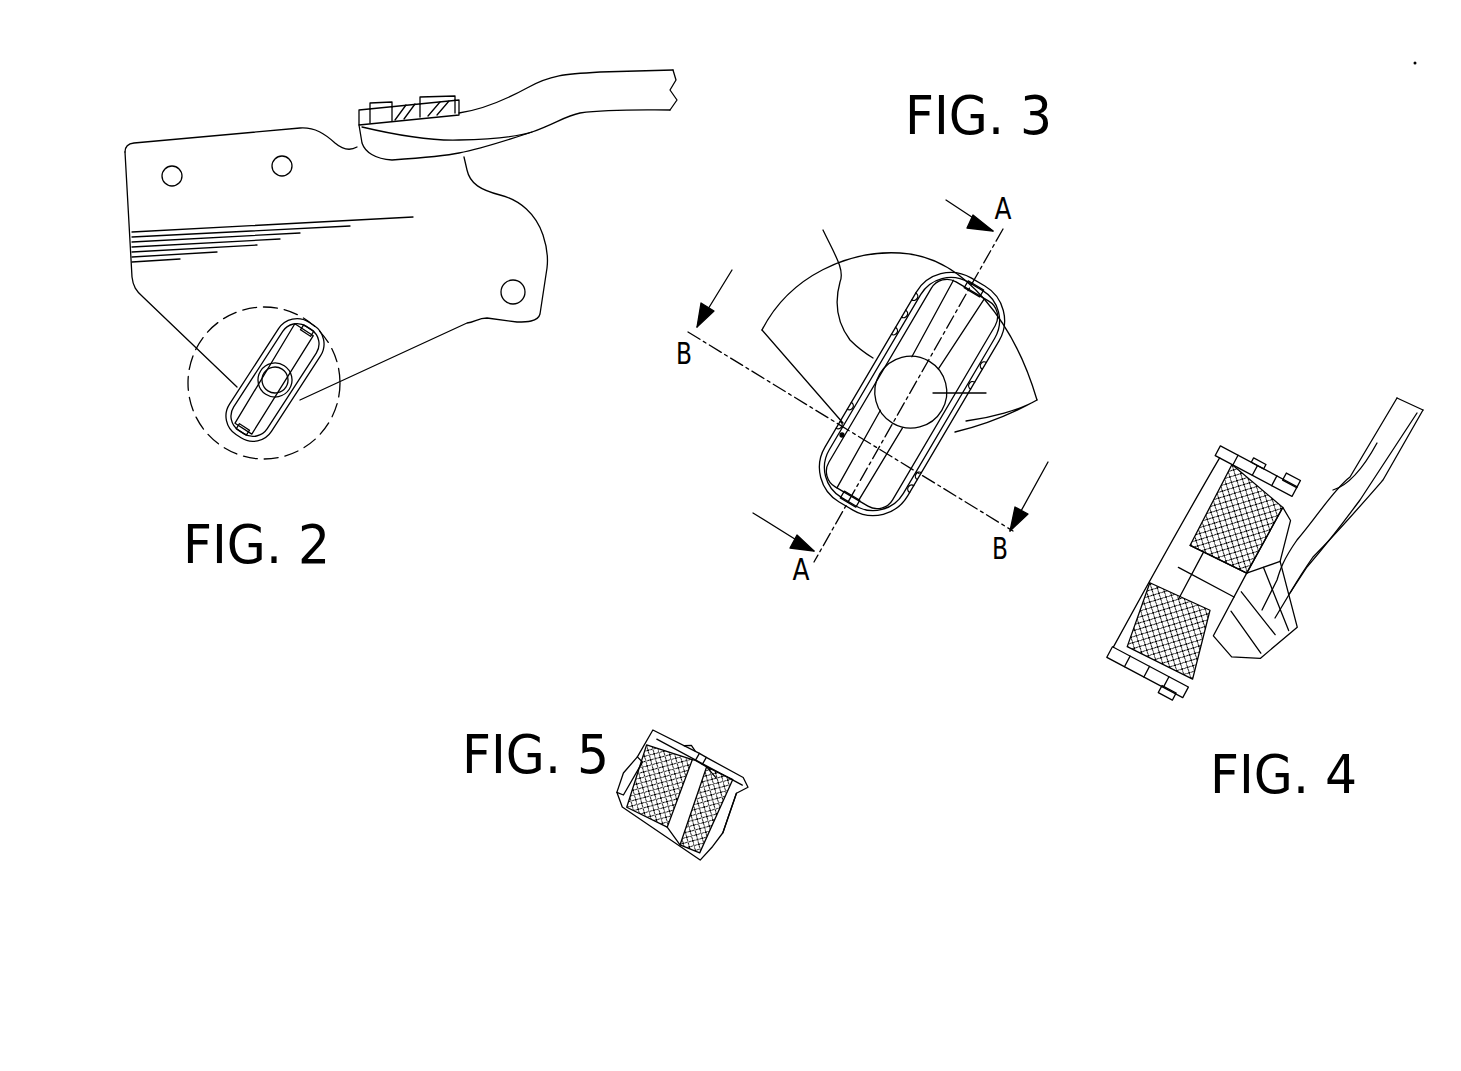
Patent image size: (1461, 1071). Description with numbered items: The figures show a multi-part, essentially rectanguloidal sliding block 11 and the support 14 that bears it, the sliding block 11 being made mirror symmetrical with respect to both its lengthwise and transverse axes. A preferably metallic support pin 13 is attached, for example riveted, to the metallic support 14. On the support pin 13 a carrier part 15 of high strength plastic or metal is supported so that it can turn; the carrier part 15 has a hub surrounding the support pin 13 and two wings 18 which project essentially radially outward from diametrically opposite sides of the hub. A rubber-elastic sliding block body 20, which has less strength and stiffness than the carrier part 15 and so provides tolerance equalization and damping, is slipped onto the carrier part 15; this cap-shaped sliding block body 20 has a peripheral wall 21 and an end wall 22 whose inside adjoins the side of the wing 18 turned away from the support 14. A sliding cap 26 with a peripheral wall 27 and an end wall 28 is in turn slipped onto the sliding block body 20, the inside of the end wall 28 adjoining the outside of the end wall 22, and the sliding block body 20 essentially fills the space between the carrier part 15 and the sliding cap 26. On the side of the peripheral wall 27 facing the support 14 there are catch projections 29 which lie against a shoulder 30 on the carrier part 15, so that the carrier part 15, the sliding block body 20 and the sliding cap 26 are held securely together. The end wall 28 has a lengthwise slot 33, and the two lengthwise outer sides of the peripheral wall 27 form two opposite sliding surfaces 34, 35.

In FIG. 2, the sliding block 11 is at (272, 418).
In FIG. 3, the support pin 13 is at (976, 413).
In FIG. 4, the support pin 13 is at (1266, 597).
In FIG. 2, the support 14 is at (427, 282).
In FIG. 4, the support 14 is at (1356, 499).
In FIG. 3, the carrier part 15 is at (861, 463).
In FIG. 4, the carrier part 15 is at (1196, 670).
In FIG. 5, the wings 18 is at (670, 810).
In FIG. 3, the sliding block body 20 is at (842, 435).
In FIG. 5, the sliding block body 20 is at (693, 847).
In FIG. 5, the peripheral wall 21 is at (723, 807).
In FIG. 4, the end wall 22 is at (1208, 485).
In FIG. 5, the end wall 22 is at (730, 760).
In FIG. 3, the sliding cap 26 is at (907, 292).
In FIG. 4, the sliding cap 26 is at (1260, 461).
In FIG. 5, the sliding cap 26 is at (713, 773).
In FIG. 3, the peripheral wall 27 is at (996, 323).
In FIG. 5, the end wall 28 is at (690, 750).
In FIG. 3, the catch projections 29 is at (970, 300).
In FIG. 4, the catch projections 29 is at (1293, 475).
In FIG. 4, the shoulder 30 is at (1130, 666).
In FIG. 5, the lengthwise slot 33 is at (703, 757).
In FIG. 3, the sliding surface 34 is at (823, 230).
In FIG. 5, the sliding surface 34 is at (643, 747).
In FIG. 3, the sliding surface 35 is at (969, 420).
In FIG. 5, the sliding surface 35 is at (733, 820).